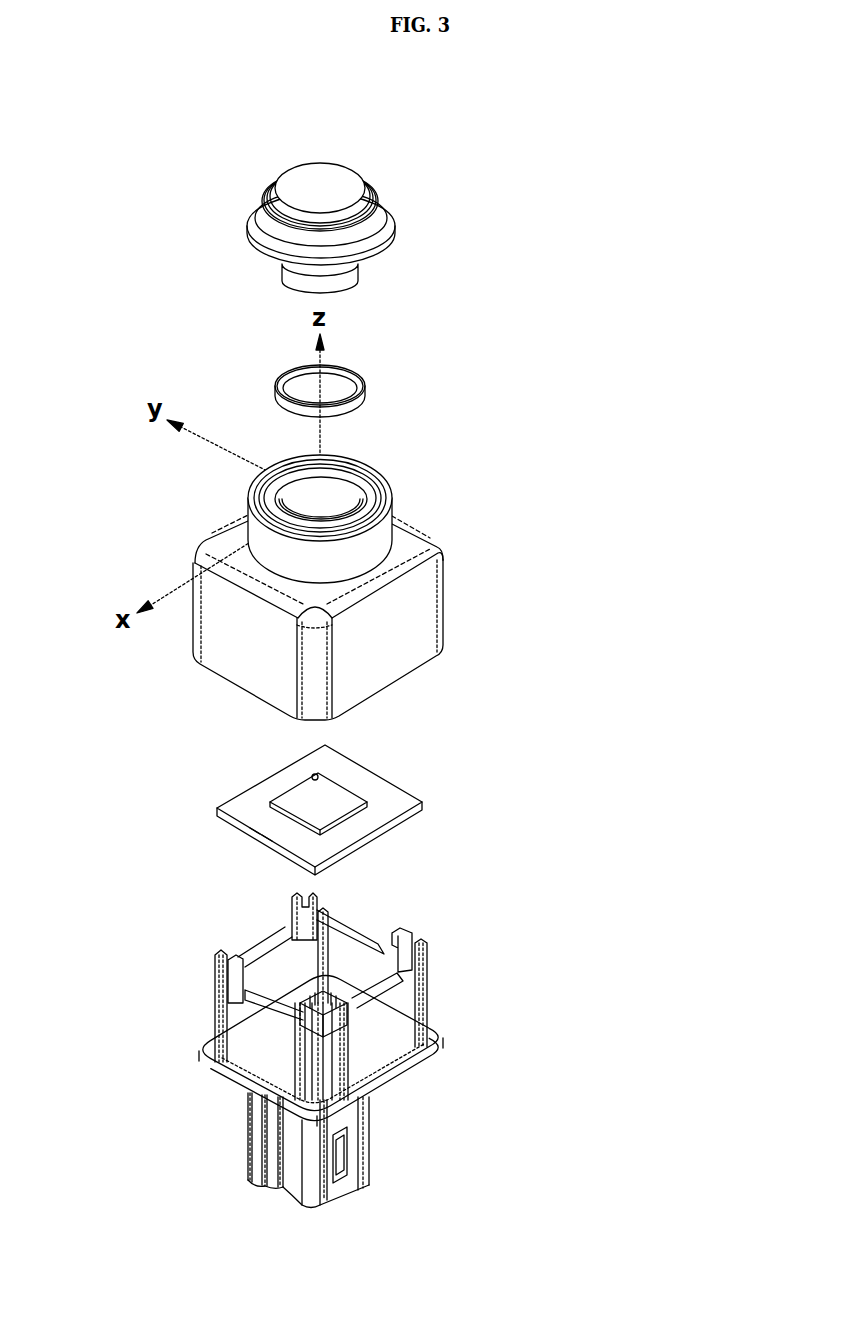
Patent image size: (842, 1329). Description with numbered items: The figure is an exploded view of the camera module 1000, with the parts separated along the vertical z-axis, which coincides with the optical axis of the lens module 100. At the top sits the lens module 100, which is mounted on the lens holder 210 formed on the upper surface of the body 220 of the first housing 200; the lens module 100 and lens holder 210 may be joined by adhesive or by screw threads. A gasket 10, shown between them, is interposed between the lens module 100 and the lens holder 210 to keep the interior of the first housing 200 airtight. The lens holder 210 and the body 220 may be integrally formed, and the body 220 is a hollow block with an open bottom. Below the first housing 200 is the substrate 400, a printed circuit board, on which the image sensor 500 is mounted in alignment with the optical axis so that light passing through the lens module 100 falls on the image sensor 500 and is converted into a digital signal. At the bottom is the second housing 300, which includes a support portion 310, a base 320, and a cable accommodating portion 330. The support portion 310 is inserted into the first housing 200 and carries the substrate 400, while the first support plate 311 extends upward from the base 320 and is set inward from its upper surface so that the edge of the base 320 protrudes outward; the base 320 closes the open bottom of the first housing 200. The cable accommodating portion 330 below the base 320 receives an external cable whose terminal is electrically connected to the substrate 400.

The camera module 1000 is at (143, 157).
The lens module 100 is at (394, 198).
The gasket 10 is at (360, 399).
The first housing 200 is at (460, 584).
The lens holder 210 is at (250, 532).
The body 220 is at (233, 653).
The substrate 400 is at (390, 808).
The image sensor 500 is at (337, 801).
The second housing 300 is at (445, 1005).
The support portion 310 is at (257, 1024).
The first support plate 311 is at (270, 966).
The base 320 is at (257, 1070).
The cable accommodating portion 330 is at (283, 1140).